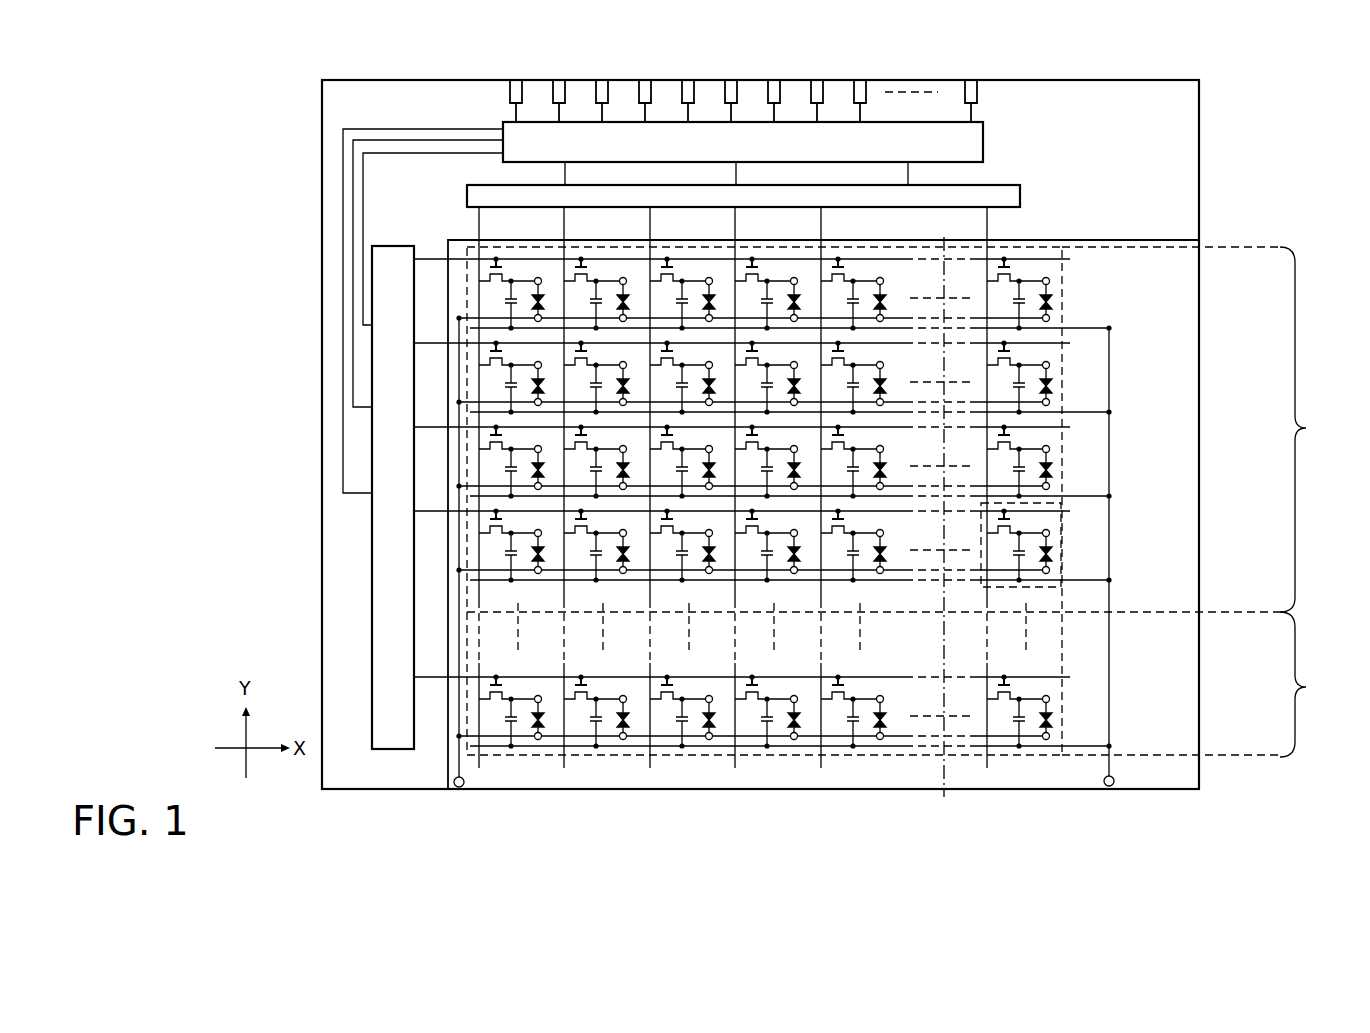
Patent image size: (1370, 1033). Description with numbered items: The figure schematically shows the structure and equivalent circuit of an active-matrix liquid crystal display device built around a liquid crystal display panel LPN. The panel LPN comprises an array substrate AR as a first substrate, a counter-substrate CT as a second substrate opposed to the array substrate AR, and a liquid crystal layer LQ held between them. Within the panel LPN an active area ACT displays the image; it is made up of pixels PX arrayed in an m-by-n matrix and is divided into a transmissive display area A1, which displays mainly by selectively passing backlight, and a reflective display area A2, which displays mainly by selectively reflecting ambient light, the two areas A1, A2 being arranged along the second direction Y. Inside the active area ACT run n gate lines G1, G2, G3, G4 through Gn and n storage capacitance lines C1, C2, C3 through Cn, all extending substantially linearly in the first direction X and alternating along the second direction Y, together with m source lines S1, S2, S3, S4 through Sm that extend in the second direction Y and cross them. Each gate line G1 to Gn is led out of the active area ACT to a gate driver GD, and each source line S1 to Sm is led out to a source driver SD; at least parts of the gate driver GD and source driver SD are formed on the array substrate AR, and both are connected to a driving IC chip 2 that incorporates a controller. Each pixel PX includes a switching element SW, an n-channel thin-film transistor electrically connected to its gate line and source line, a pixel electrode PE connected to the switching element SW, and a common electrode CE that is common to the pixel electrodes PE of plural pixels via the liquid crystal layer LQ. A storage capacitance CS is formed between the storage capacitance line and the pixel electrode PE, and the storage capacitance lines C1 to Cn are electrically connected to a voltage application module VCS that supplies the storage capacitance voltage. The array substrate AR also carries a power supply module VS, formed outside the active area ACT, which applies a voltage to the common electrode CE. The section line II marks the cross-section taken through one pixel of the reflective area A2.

The driving IC chip 2 is at (984, 122).
The liquid crystal display panel LPN is at (1232, 93).
The array substrate AR is at (383, 778).
The counter-substrate CT is at (1168, 240).
The active area ACT is at (1062, 357).
The source driver SD is at (1022, 193).
The gate driver GD is at (371, 612).
The gate line G1 is at (427, 257).
The gate line G2 is at (427, 341).
The gate line G3 is at (427, 425).
The gate line G4 is at (427, 509).
The gate line Gn is at (427, 675).
The source line S1 is at (483, 226).
The source line S2 is at (568, 226).
The source line S3 is at (654, 226).
The source line S4 is at (739, 226).
The source line Sm is at (991, 226).
The storage capacitance line C1 is at (1085, 326).
The storage capacitance line C2 is at (1085, 409).
The storage capacitance line C3 is at (1085, 493).
The storage capacitance line Cn is at (1084, 744).
The pixel PX is at (1028, 550).
The switching element SW is at (991, 522).
The storage capacitance CS is at (1010, 551).
The pixel electrode PE is at (1050, 531).
The liquid crystal layer LQ is at (1053, 555).
The common electrode CE is at (1050, 570).
The power supply module VS is at (463, 785).
The voltage application module VCS is at (1114, 780).
The transmissive display area A1 is at (1310, 429).
The reflective display area A2 is at (1310, 684).
The section line II is at (944, 519).